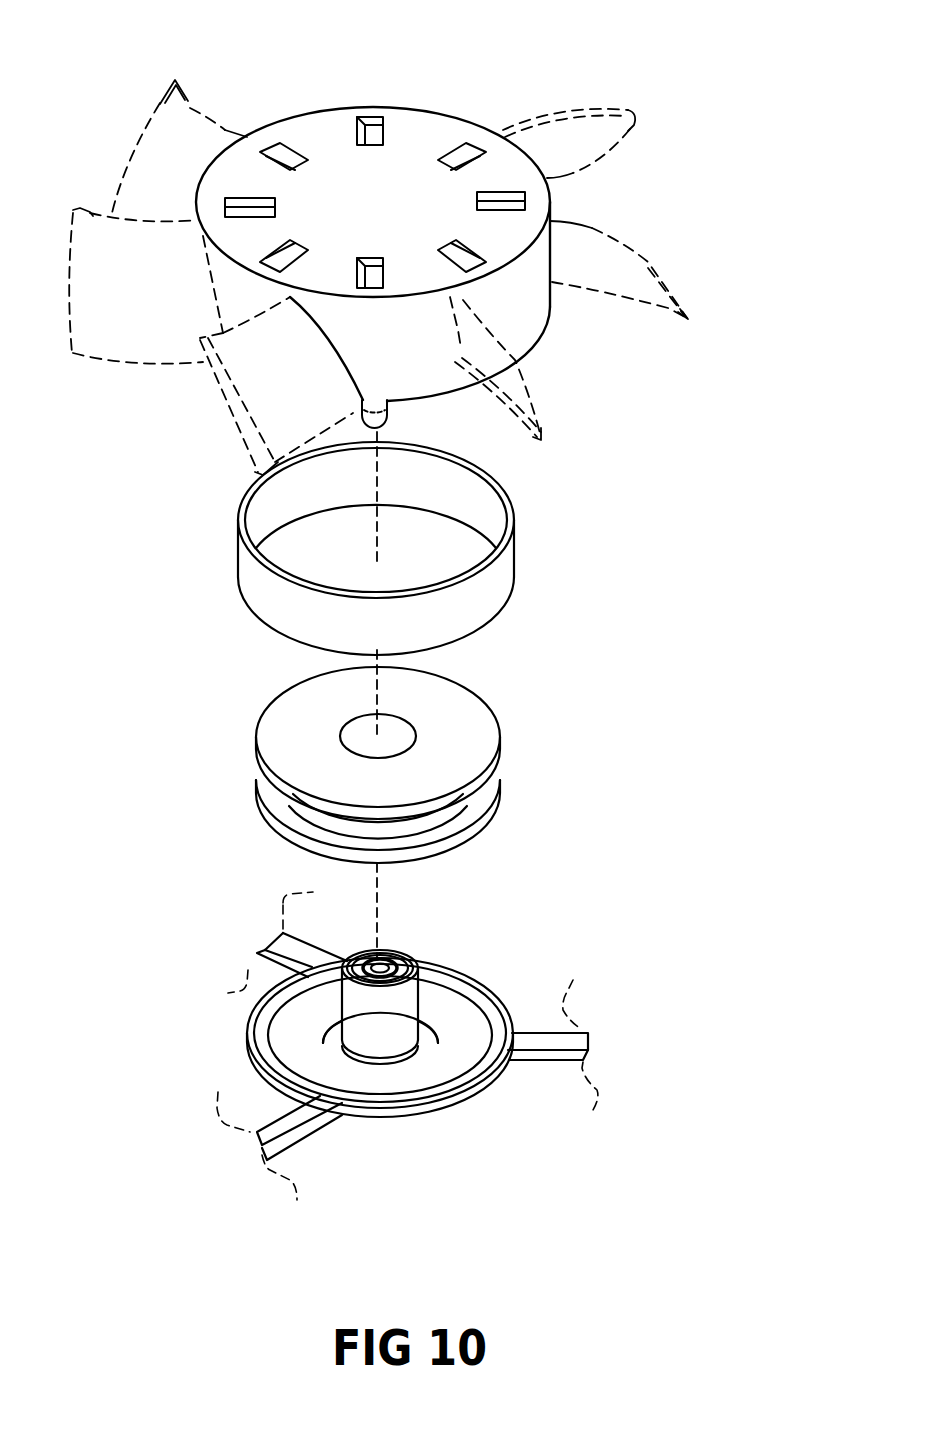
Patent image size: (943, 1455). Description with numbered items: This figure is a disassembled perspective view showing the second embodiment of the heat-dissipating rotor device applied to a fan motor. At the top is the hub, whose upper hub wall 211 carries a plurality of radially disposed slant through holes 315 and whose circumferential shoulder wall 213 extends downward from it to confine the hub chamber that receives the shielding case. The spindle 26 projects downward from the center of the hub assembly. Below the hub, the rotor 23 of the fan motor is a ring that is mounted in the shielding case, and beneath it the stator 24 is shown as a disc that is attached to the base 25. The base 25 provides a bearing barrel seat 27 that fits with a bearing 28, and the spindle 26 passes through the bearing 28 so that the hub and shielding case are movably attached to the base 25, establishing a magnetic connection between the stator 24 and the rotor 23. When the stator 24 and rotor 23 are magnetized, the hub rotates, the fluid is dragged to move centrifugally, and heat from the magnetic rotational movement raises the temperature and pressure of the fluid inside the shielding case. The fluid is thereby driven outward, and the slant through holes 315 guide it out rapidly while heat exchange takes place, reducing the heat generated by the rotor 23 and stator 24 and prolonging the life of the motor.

The upper hub wall 211 is at (320, 133).
The through holes 315 is at (460, 142).
The circumferential shoulder wall 213 is at (530, 320).
The spindle 26 is at (388, 412).
The rotor 23 is at (497, 583).
The stator 24 is at (468, 753).
The base 25 is at (460, 1015).
The bearing barrel seat 27 is at (355, 1008).
The bearing 28 is at (410, 962).